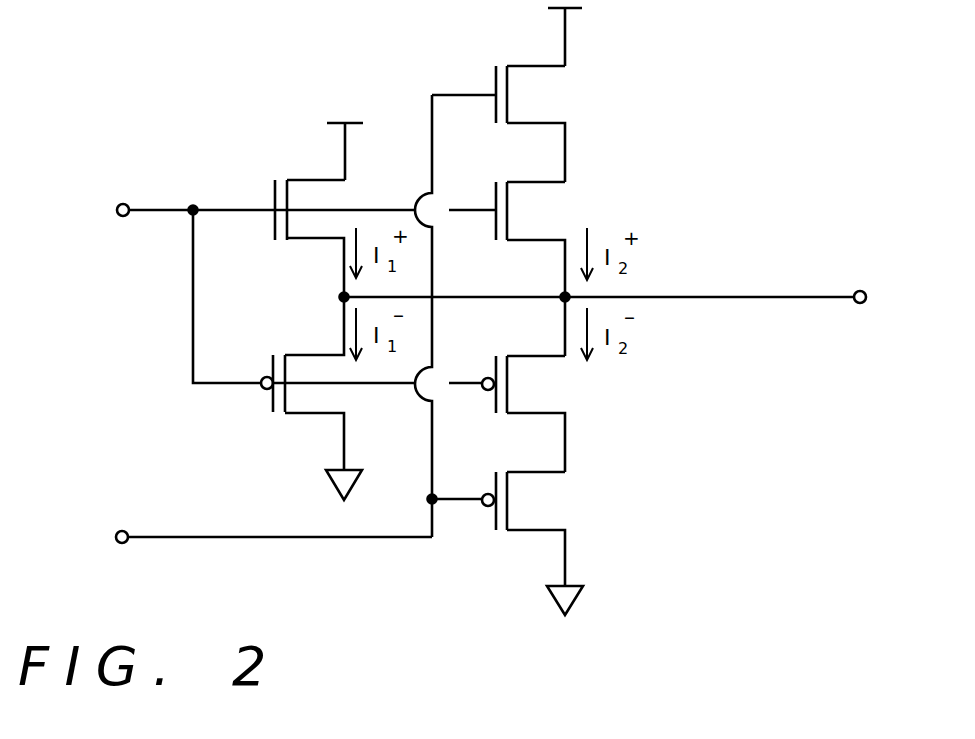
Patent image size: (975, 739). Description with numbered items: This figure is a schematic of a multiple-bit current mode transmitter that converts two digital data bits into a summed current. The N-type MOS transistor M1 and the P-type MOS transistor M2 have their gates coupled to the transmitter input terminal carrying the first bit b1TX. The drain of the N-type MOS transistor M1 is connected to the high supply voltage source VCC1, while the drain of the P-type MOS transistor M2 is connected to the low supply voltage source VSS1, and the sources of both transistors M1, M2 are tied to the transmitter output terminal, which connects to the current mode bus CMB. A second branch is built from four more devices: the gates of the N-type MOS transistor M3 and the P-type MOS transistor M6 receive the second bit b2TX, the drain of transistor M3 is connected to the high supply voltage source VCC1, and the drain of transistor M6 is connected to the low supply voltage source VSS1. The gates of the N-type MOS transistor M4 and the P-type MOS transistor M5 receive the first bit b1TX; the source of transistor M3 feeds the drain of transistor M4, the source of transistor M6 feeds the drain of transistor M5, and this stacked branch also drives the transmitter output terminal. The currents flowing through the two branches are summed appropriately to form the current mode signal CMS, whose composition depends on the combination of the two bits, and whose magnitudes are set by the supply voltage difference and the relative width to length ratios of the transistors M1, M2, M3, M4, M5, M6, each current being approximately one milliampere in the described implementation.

The N-type MOS transistor M1 is at (310, 224).
The P-type MOS transistor M2 is at (338, 383).
The N-type MOS transistor M3 is at (539, 95).
The N-type MOS transistor M4 is at (530, 239).
The P-type MOS transistor M5 is at (523, 384).
The P-type MOS transistor M6 is at (497, 529).
The first bit b1TX is at (250, 278).
The second bit b2TX is at (258, 522).
The current mode signal CMS is at (778, 282).
The current mode bus CMB is at (615, 312).
The high supply voltage source VCC1 is at (348, 131).
The low supply voltage source VSS1 is at (445, 552).